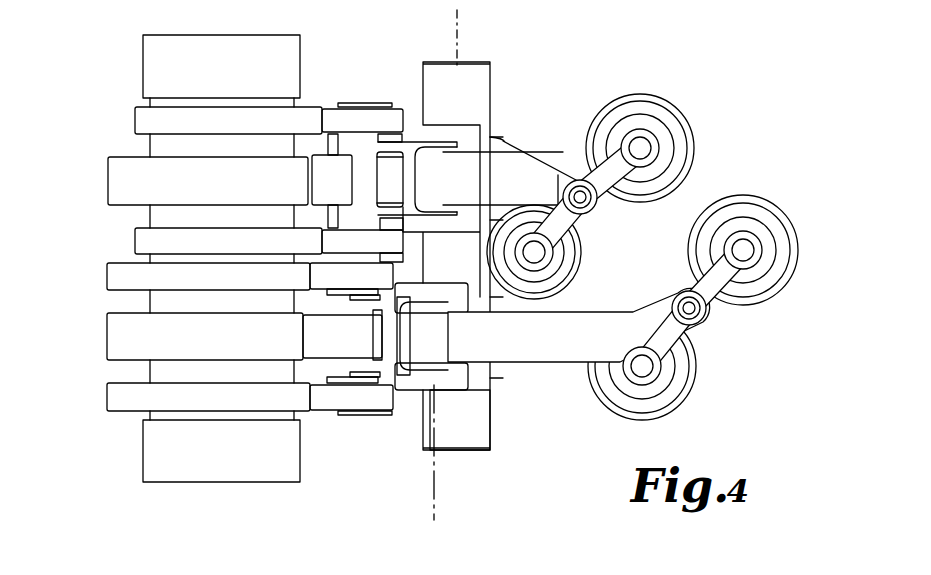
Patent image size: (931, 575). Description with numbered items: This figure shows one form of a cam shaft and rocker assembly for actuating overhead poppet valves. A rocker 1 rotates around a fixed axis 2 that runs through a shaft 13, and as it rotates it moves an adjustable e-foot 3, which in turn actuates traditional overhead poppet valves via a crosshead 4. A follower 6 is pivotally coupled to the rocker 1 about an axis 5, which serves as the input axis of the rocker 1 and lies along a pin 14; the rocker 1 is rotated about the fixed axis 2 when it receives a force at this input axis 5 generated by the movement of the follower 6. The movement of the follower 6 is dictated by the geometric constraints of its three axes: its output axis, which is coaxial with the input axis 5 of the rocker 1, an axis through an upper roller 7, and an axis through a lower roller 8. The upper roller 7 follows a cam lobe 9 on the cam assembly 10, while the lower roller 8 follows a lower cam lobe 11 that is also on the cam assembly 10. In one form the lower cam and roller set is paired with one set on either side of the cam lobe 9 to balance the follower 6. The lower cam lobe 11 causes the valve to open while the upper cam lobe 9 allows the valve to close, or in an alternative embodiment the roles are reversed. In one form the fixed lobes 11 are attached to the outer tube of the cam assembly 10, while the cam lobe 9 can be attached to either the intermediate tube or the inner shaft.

The rocker 1 is at (560, 363).
The fixed axis 2 is at (458, 40).
The adjustable e-foot 3 is at (798, 250).
The crosshead 4 is at (722, 280).
The axis 5 is at (432, 503).
The follower 6 is at (388, 362).
The upper roller 7 is at (373, 338).
The lower roller 8 is at (330, 275).
The cam lobe 9 is at (107, 337).
The cam assembly 10 is at (228, 486).
The cam lobe 11 is at (107, 280).
The shaft 13 is at (490, 107).
The pin 14 is at (448, 395).